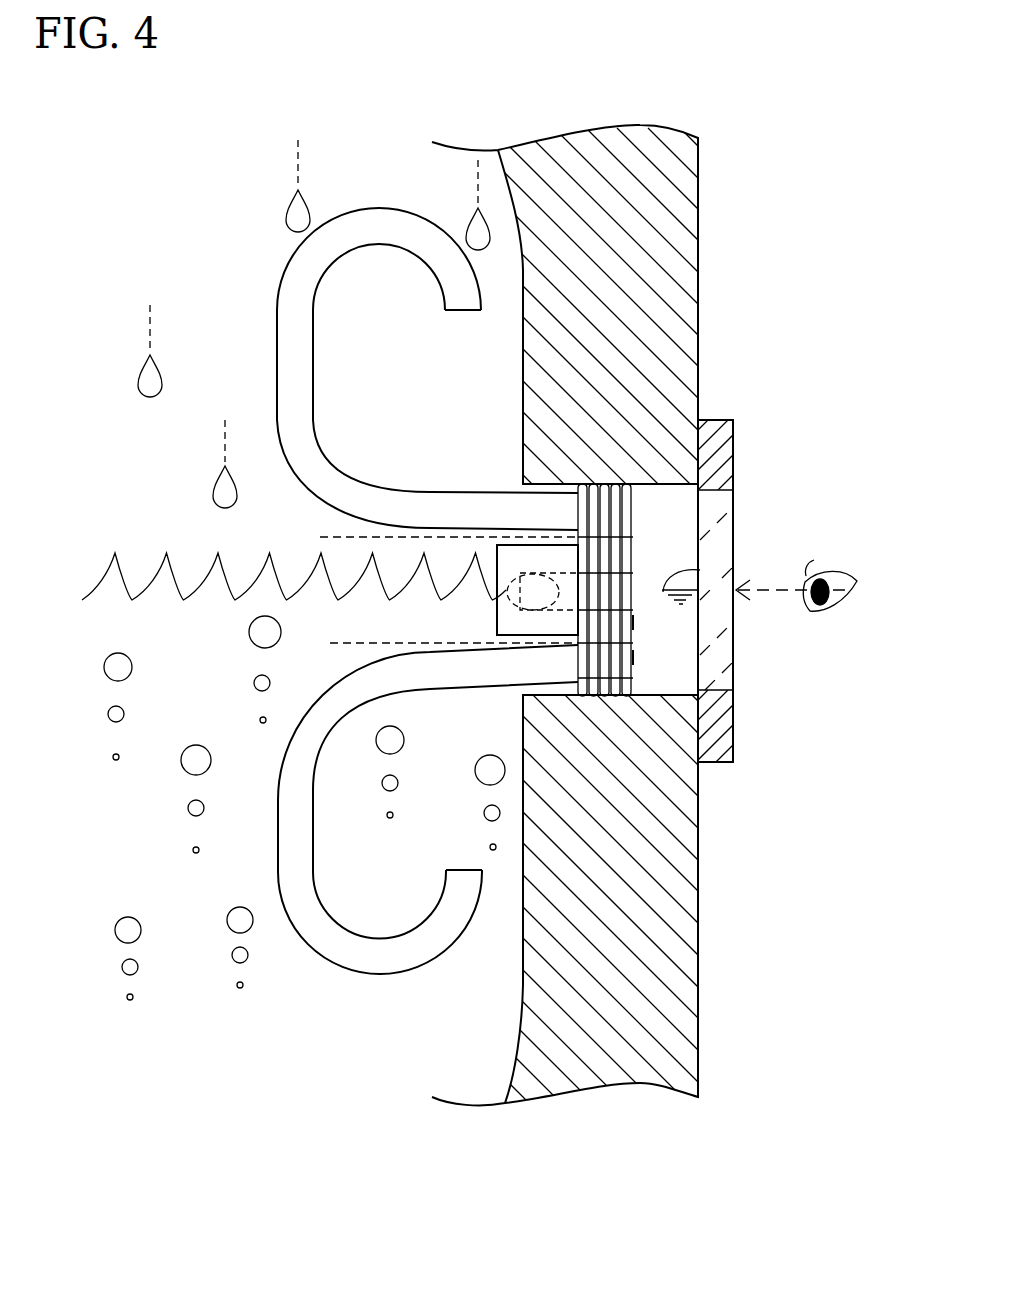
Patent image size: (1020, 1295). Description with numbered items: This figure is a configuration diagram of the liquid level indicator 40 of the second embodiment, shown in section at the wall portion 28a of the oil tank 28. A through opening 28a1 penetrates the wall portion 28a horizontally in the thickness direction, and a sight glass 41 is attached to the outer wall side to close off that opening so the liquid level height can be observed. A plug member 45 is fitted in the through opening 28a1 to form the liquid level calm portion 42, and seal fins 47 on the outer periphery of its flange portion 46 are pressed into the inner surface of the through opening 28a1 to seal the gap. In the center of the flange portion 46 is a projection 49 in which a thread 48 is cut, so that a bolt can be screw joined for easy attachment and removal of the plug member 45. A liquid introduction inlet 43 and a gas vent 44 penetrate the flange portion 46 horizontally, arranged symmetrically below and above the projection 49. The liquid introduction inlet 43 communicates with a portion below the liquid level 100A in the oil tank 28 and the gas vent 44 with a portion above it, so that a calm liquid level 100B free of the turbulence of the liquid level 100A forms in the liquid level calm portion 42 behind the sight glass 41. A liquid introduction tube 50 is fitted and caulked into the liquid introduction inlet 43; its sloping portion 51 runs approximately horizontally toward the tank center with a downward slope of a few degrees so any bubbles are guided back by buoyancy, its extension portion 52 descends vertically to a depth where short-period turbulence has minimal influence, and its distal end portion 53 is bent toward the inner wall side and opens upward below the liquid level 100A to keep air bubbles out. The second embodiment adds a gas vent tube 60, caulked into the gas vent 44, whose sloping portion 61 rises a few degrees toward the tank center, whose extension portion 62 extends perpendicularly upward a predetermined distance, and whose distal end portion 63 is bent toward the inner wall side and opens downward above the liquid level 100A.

The oil tank 28 is at (555, 615).
The wall portion 28a is at (665, 292).
The through opening 28a1 is at (548, 485).
The liquid level indicator 40 is at (735, 575).
The sight glass 41 is at (737, 568).
The liquid level calm portion 42 is at (670, 530).
The liquid introduction inlet 43 is at (633, 657).
The gas vent 44 is at (633, 518).
The plug member 45 is at (633, 623).
The flange portion 46 is at (642, 680).
The seal fins 47 is at (626, 700).
The thread 48 is at (496, 560).
The projection 49 is at (490, 603).
The liquid introduction tube 50 is at (391, 779).
The sloping portion 51 is at (416, 641).
The extension portion 52 is at (275, 820).
The distal end portion 53 is at (462, 866).
The gas vent tube 60 is at (385, 387).
The sloping portion 61 is at (434, 490).
The extension portion 62 is at (275, 354).
The distal end portion 63 is at (460, 318).
The liquid level 100A is at (236, 600).
The calm liquid level 100B is at (735, 606).